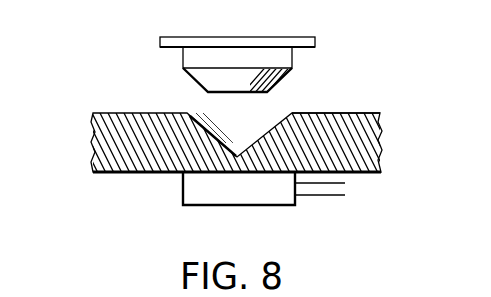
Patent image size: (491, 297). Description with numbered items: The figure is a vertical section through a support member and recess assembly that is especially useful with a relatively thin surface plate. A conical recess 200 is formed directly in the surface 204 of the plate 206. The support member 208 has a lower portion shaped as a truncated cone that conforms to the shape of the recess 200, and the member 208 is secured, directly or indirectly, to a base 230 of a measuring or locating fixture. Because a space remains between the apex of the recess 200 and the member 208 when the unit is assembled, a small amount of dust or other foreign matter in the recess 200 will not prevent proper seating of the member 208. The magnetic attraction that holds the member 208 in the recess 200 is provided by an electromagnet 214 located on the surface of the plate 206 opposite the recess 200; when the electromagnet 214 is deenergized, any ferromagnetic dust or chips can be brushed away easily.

The conical recess 200 is at (263, 121).
The surface 204 is at (337, 112).
The plate 206 is at (93, 137).
The support member 208 is at (187, 73).
The electromagnet 214 is at (268, 206).
The base 230 is at (172, 38).